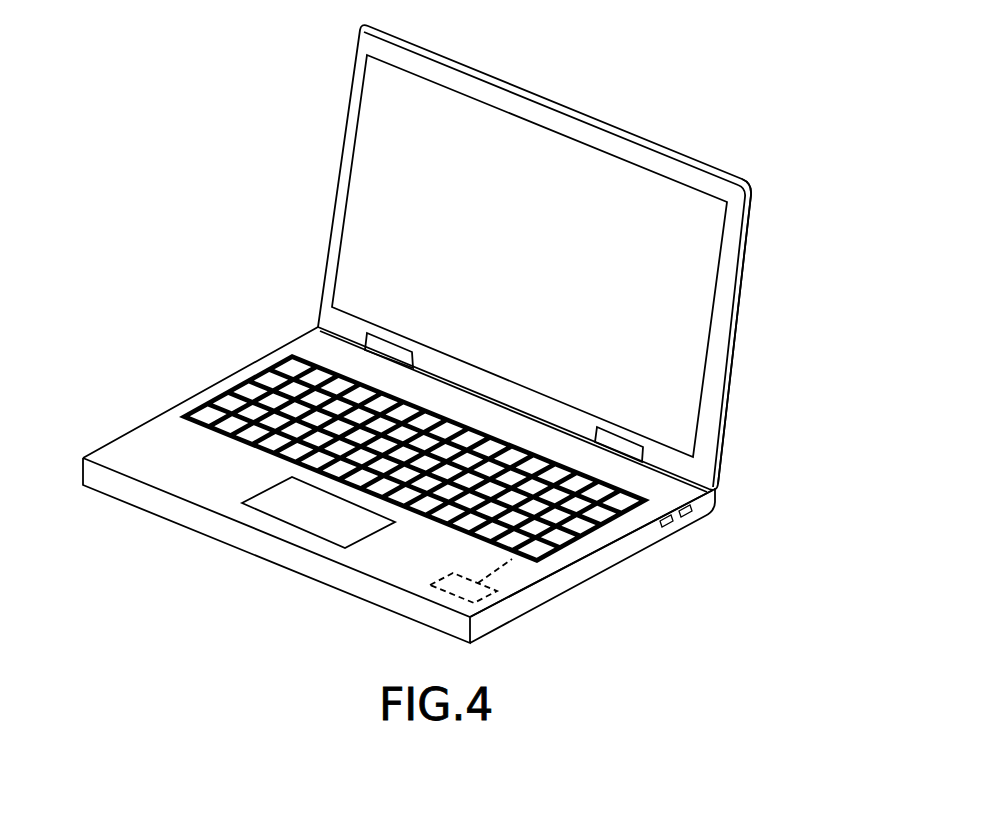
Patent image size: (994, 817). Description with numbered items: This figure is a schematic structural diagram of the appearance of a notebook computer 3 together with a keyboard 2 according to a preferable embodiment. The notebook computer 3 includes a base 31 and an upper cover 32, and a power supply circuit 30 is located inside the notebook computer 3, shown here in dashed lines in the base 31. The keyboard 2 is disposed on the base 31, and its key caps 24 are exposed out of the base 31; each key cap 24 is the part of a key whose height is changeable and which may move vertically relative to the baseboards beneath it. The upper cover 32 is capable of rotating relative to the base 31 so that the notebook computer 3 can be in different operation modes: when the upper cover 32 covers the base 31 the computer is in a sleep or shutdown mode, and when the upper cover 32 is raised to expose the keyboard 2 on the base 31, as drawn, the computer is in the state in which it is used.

The keyboard 2 is at (593, 523).
The notebook computer 3 is at (508, 424).
The key cap 24 is at (217, 405).
The power supply circuit 30 is at (472, 594).
The base 31 is at (570, 575).
The upper cover 32 is at (727, 290).